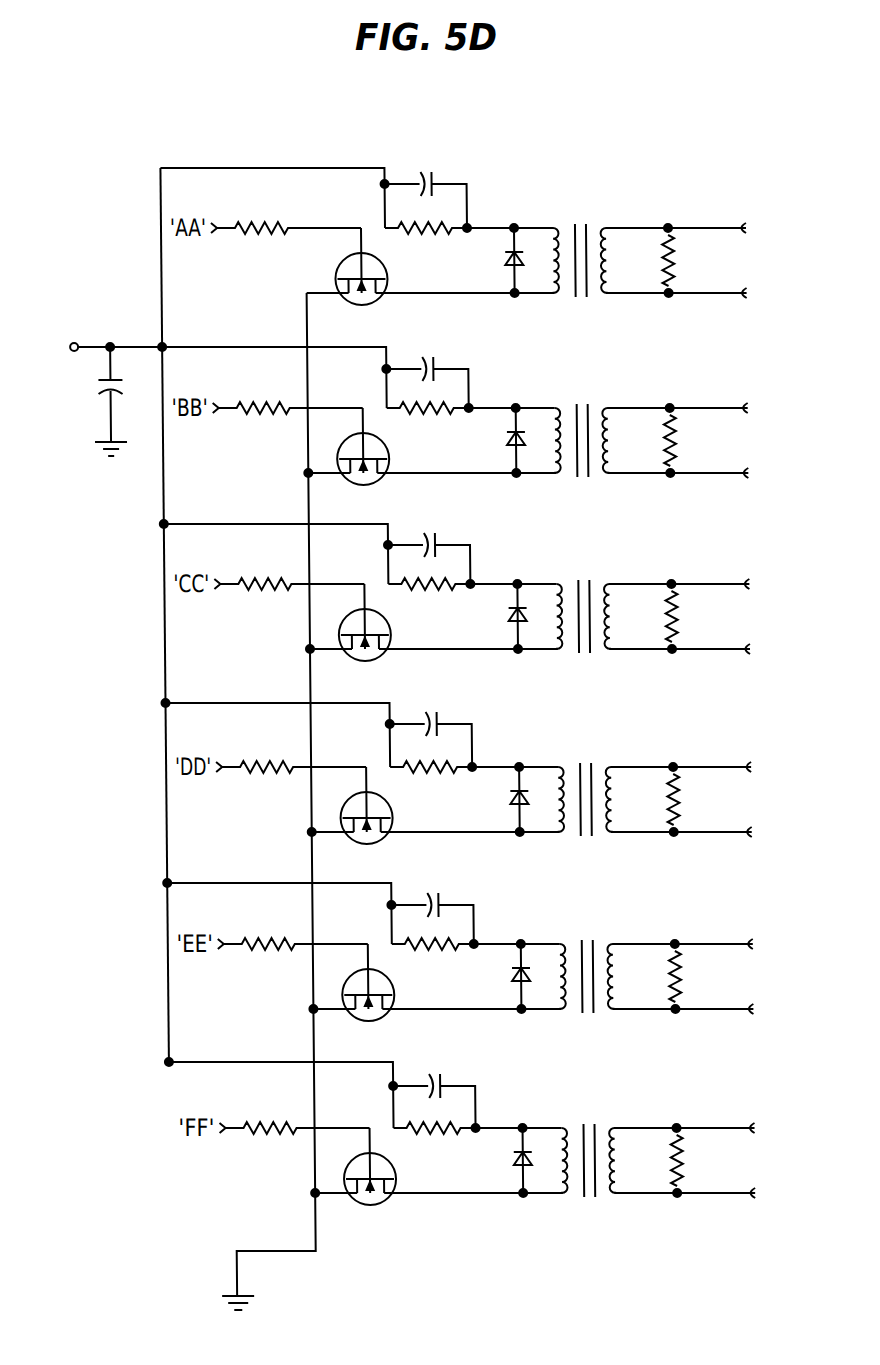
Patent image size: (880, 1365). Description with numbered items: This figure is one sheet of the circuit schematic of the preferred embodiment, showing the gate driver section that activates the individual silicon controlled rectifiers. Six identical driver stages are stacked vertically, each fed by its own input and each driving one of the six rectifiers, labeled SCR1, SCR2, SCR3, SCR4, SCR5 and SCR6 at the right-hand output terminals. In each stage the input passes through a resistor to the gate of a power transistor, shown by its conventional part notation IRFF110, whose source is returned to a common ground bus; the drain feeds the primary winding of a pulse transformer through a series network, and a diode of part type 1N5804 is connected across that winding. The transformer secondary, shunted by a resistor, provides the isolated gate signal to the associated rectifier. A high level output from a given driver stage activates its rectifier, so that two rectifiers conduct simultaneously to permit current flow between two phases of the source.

The silicon controlled rectifier SCR1 is at (695, 260).
The silicon controlled rectifier SCR2 is at (696, 440).
The silicon controlled rectifier SCR3 is at (698, 616).
The silicon controlled rectifier SCR4 is at (700, 799).
The silicon controlled rectifier SCR5 is at (701, 976).
The silicon controlled rectifier SCR6 is at (703, 1160).
The power MOSFET transistor IRFF110 is at (394, 278).
The diode 1N5804 is at (529, 278).